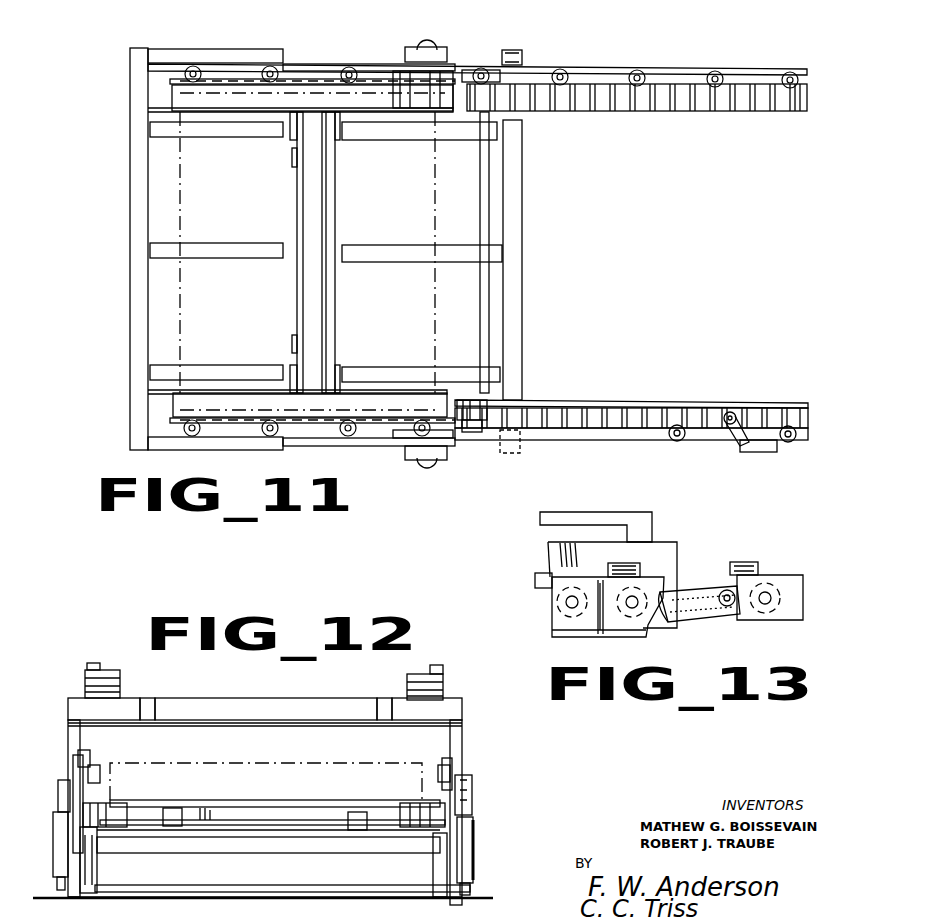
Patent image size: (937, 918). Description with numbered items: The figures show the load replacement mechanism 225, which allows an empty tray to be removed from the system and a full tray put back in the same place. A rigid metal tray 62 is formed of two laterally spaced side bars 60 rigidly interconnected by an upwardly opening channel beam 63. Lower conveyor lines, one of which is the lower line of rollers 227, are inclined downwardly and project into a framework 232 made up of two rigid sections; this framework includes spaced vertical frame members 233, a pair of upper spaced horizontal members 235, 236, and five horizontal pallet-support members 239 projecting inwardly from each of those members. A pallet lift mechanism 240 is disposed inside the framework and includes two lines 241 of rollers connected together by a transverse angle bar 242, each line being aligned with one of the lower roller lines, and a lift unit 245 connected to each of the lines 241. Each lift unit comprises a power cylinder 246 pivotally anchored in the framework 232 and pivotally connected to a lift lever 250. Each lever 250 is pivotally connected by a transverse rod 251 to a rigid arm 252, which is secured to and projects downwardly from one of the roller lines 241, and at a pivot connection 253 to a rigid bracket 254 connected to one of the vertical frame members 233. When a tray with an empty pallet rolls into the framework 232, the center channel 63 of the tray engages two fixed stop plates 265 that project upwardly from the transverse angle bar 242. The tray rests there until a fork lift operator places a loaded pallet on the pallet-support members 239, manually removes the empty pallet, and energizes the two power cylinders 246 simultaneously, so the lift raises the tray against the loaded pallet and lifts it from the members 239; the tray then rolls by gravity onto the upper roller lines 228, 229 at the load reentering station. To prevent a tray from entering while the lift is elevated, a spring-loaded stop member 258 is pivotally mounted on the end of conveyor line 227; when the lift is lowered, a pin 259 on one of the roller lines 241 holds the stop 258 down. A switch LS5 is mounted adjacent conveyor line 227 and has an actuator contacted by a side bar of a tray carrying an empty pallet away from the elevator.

In FIG. 11, the side bar 60 is at (172, 98).
In FIG. 12, the side bar 60 is at (110, 820).
In FIG. 11, the tray 62 is at (332, 199).
In FIG. 13, the tray 62 is at (674, 546).
In FIG. 12, the tray 62 is at (268, 800).
In FIG. 11, the channel beam 63 is at (305, 302).
In FIG. 12, the channel beam 63 is at (280, 810).
In FIG. 11, the load replacement mechanism 225 is at (570, 25).
In FIG. 11, the lower line of rollers 227 is at (769, 404).
In FIG. 13, the lower line of rollers 227 is at (792, 592).
In FIG. 11, the upper line of rollers 228 is at (775, 113).
In FIG. 12, the upper line of rollers 228 is at (108, 668).
In FIG. 11, the upper line of rollers 229 is at (672, 404).
In FIG. 12, the upper line of rollers 229 is at (410, 680).
In FIG. 11, the framework 232 is at (532, 249).
In FIG. 12, the framework 232 is at (466, 706).
In FIG. 11, the vertical frame member 233 is at (522, 62).
In FIG. 12, the vertical frame member 233 is at (72, 738).
In FIG. 11, the upper horizontal member 235 is at (130, 199).
In FIG. 11, the upper horizontal member 236 is at (520, 207).
In FIG. 12, the upper horizontal member 236 is at (222, 698).
In FIG. 11, the pallet-support member 239 is at (173, 49).
In FIG. 12, the pallet-support member 239 is at (70, 706).
In FIG. 11, the pallet lift mechanism 240 is at (165, 110).
In FIG. 13, the pallet lift mechanism 240 is at (554, 623).
In FIG. 12, the pallet lift mechanism 240 is at (475, 804).
In FIG. 11, the line of rollers 241 is at (172, 81).
In FIG. 13, the line of rollers 241 is at (552, 597).
In FIG. 12, the line of rollers 241 is at (115, 842).
In FIG. 12, the transverse angle bar 242 is at (310, 848).
In FIG. 11, the lift unit 245 is at (446, 48).
In FIG. 12, the lift unit 245 is at (50, 832).
In FIG. 11, the power cylinder 246 is at (426, 45).
In FIG. 12, the power cylinder 246 is at (56, 862).
In FIG. 11, the lift lever 250 is at (331, 58).
In FIG. 12, the lift lever 250 is at (73, 760).
In FIG. 11, the transverse rod 251 is at (305, 55).
In FIG. 12, the transverse rod 251 is at (425, 850).
In FIG. 12, the rigid arm 252 is at (97, 864).
In FIG. 11, the pivot connection 253 is at (505, 57).
In FIG. 12, the pivot connection 253 is at (92, 773).
In FIG. 11, the rigid bracket 254 is at (500, 420).
In FIG. 12, the rigid bracket 254 is at (86, 765).
In FIG. 13, the stop member 258 is at (712, 578).
In FIG. 13, the pin 259 is at (668, 612).
In FIG. 11, the stop plate 265 is at (292, 158).
In FIG. 12, the stop plate 265 is at (175, 810).
In FIG. 11, the switch LS5 is at (763, 452).